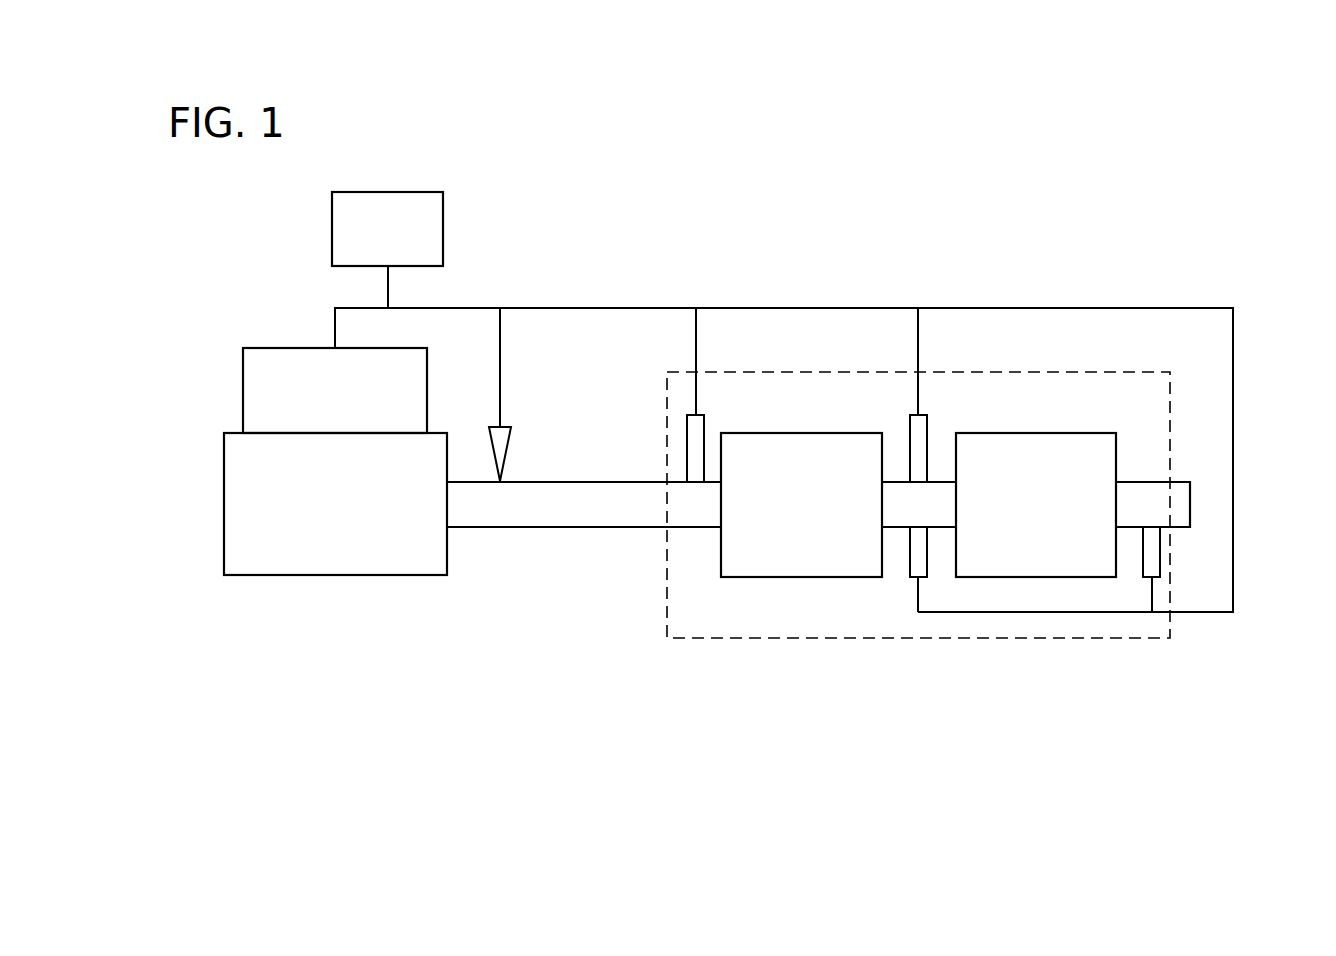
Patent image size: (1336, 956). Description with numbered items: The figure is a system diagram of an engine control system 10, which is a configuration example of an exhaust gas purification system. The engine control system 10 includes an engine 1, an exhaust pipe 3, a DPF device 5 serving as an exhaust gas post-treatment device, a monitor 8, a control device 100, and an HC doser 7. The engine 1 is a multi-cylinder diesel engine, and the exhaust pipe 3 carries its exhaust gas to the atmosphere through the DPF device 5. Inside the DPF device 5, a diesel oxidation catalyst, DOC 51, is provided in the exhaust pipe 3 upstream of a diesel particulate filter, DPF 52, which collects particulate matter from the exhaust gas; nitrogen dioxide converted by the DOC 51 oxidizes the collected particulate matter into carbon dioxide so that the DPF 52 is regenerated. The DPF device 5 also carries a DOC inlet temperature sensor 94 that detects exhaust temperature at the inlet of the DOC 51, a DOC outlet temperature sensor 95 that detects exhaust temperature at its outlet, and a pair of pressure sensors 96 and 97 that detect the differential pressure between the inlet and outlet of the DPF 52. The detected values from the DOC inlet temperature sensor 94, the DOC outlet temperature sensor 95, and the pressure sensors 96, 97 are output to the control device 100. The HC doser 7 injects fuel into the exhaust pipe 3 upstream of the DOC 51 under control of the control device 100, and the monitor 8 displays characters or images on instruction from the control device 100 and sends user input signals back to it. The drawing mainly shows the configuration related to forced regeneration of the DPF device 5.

The engine 1 is at (337, 577).
The exhaust pipe 3 is at (592, 530).
The DPF device 5 is at (1078, 372).
The HC doser 7 is at (510, 442).
The monitor 8 is at (443, 217).
The engine control system 10 is at (1110, 212).
The diesel oxidation catalyst (DOC) 51 is at (797, 433).
The diesel particulate filter (DPF) 52 is at (1045, 433).
The DOC inlet temperature sensor 94 is at (687, 440).
The DOC outlet temperature sensor 95 is at (910, 440).
The pressure sensor 96 is at (910, 578).
The pressure sensor 97 is at (1160, 549).
The control device 100 is at (427, 372).